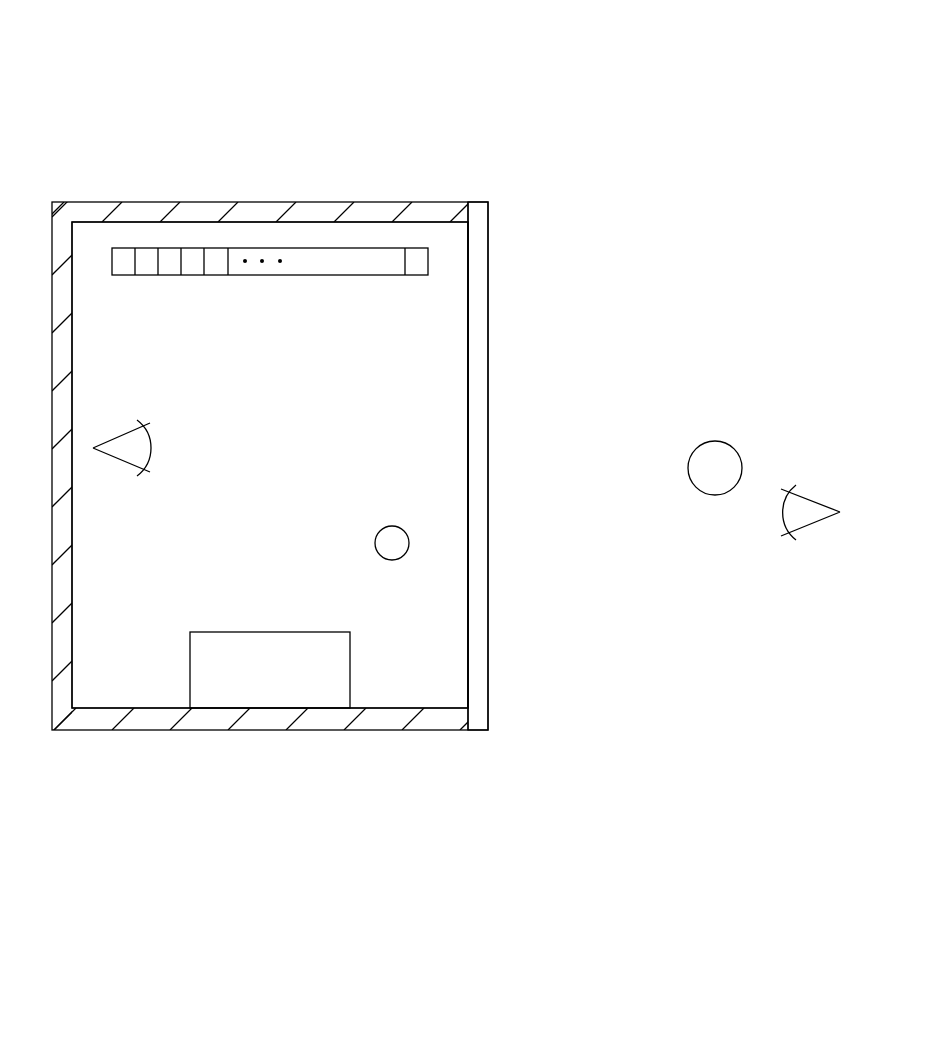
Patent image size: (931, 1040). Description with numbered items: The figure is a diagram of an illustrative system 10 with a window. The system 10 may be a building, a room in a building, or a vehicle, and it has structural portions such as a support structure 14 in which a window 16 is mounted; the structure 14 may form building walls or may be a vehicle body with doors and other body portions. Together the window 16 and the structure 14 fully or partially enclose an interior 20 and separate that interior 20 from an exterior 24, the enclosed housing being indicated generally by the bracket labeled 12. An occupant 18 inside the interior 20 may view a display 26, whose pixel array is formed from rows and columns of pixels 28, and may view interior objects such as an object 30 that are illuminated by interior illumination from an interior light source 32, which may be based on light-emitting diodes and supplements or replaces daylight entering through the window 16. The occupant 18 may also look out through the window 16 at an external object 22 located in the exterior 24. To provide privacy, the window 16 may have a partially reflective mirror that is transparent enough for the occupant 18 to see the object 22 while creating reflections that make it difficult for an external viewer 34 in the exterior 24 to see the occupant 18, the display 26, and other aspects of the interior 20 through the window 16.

The system 10 is at (442, 90).
The enclosure 12 is at (301, 509).
The support structure 14 is at (307, 721).
The window 16 is at (489, 622).
The occupant 18 is at (120, 482).
The interior 20 is at (443, 353).
The external object 22 is at (716, 441).
The exterior 24 is at (628, 390).
The display 26 is at (269, 245).
The pixels 28 is at (268, 216).
The object 30 is at (392, 560).
The interior light source 32 is at (350, 664).
The external viewer 34 is at (811, 523).